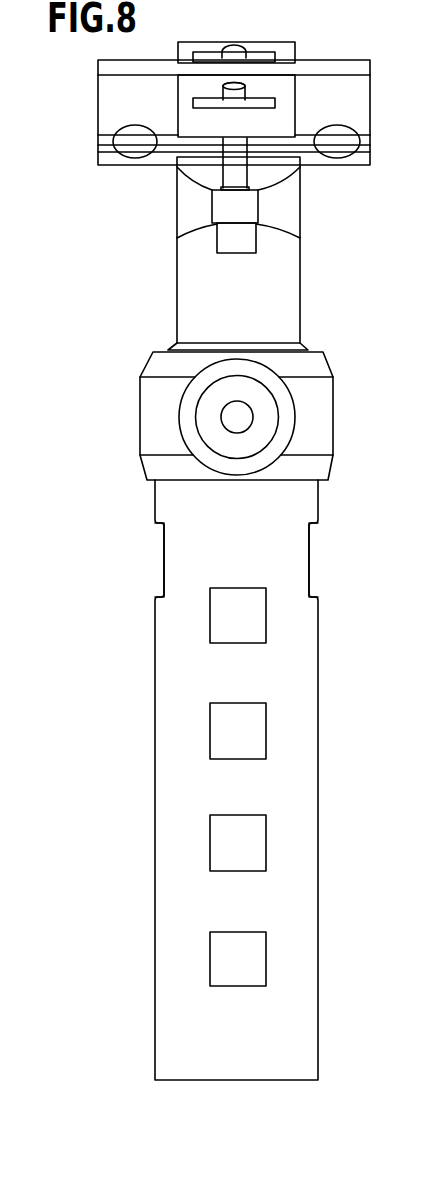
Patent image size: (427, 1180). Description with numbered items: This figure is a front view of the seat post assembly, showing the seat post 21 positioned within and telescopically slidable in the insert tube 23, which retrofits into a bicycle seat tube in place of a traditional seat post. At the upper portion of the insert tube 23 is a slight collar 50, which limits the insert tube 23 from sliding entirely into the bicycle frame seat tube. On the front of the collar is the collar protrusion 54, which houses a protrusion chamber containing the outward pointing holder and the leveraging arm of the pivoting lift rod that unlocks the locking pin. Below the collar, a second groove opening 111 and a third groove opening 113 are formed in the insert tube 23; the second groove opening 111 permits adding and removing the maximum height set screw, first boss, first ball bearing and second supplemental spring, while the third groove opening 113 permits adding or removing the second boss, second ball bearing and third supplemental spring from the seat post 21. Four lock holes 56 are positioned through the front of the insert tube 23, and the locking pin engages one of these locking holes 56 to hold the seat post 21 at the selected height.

The seat post 21 is at (208, 277).
The collar 50 is at (155, 443).
The collar protrusion 54 is at (222, 467).
The insert tube 23 is at (177, 893).
The third groove opening 113 is at (162, 570).
The second groove opening 111 is at (307, 570).
The locking holes 56 is at (230, 837).